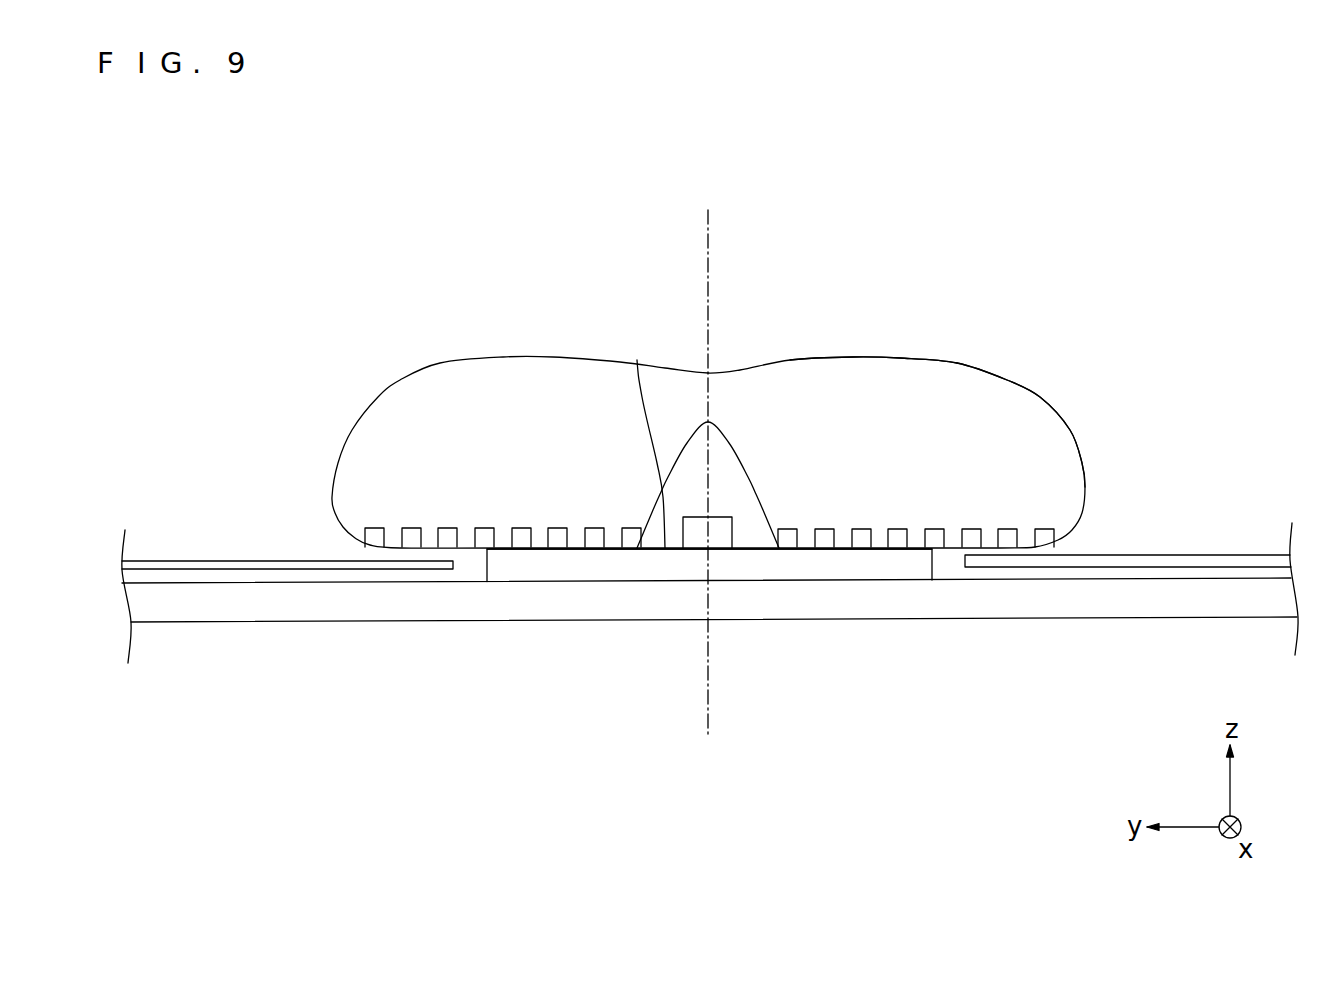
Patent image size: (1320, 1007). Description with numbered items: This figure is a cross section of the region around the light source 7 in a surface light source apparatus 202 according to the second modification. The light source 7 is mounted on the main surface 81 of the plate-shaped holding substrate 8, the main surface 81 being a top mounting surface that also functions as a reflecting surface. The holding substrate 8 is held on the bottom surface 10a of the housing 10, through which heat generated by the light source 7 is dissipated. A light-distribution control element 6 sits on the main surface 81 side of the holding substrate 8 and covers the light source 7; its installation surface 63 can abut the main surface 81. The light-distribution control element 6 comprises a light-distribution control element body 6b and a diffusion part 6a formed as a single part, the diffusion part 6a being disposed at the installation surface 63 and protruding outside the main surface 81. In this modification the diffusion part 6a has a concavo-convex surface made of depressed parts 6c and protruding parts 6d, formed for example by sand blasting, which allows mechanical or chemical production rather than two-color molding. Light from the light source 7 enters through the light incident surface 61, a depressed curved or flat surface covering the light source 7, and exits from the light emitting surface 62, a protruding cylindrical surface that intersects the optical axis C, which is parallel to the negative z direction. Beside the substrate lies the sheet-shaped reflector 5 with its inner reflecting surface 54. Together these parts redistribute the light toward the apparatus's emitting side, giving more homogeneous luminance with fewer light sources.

The surface light source apparatus 202 is at (282, 260).
The optical axis C is at (710, 258).
The light-distribution control element 6 is at (385, 390).
The diffusion part 6a is at (938, 670).
The light-distribution control element body 6b is at (998, 405).
The depressed parts 6c is at (858, 550).
The protruding parts 6d is at (912, 550).
The light emitting surface 62 is at (887, 357).
The installation surface 63 is at (572, 552).
The light incident surface 61 is at (747, 552).
The light source 7 is at (720, 528).
The holding substrate 8 is at (505, 572).
The main surface 81 is at (637, 360).
The housing 10 is at (222, 603).
The bottom surface 10a is at (182, 580).
The reflector 5 is at (1158, 555).
The reflecting surface 54 is at (1243, 555).